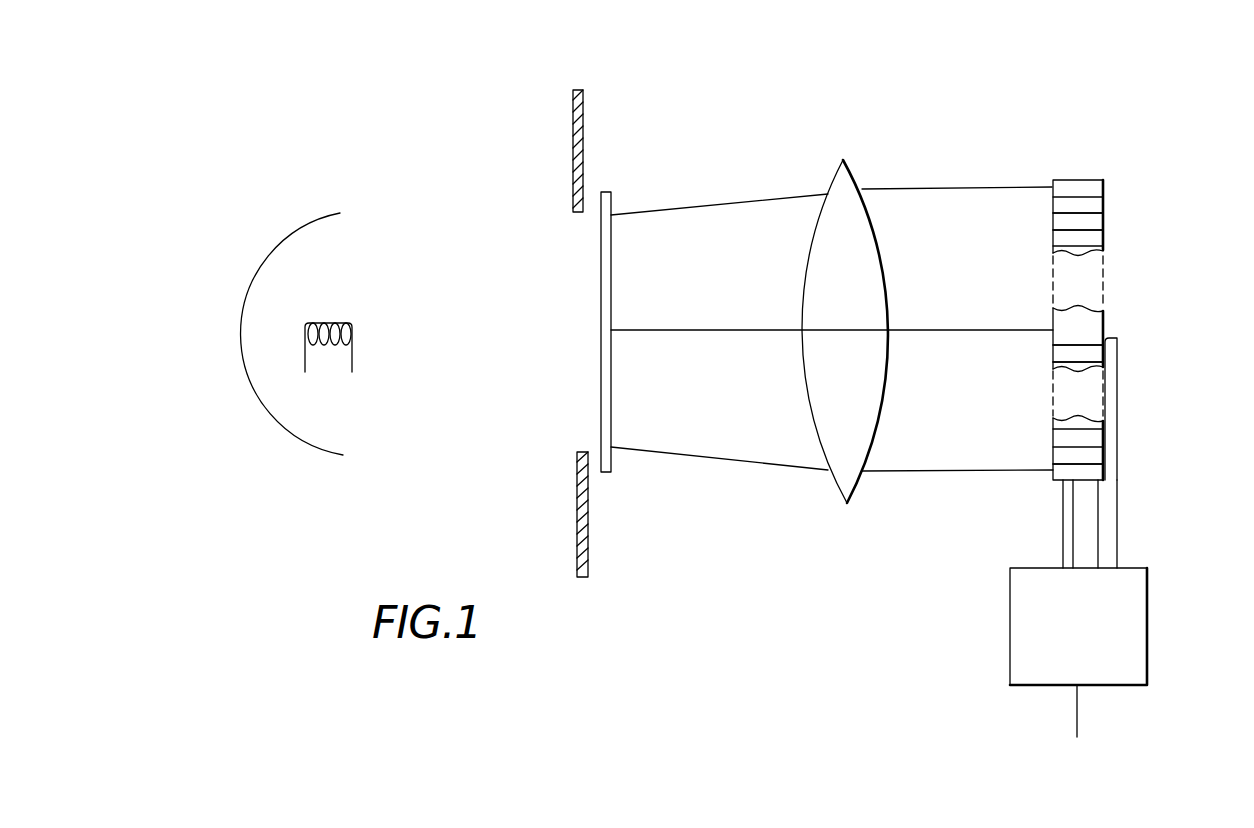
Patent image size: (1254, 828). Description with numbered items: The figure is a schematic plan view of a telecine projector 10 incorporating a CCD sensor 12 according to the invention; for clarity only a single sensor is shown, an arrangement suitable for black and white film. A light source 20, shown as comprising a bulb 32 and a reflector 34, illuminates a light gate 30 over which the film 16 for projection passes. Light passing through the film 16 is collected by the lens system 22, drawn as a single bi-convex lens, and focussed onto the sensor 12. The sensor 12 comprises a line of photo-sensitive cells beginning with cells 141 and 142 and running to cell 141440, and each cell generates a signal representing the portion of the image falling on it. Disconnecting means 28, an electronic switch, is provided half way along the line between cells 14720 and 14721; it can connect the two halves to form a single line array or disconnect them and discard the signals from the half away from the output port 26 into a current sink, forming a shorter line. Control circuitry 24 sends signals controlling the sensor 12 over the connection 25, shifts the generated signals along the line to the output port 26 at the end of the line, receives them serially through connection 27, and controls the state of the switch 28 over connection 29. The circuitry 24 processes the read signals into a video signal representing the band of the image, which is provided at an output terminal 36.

The telecine projector 10 is at (318, 99).
The light source 20 is at (240, 249).
The reflector 34 is at (242, 385).
The bulb 32 is at (355, 330).
The light gate 30 is at (573, 104).
The film 16 is at (609, 192).
The lens system 22 is at (848, 164).
The CCD sensor 12 is at (1075, 170).
The photo-sensitive cell 141 is at (1090, 190).
The photo-sensitive cell 142 is at (1087, 204).
The photo-sensitive cell 14720 is at (1090, 320).
The disconnecting means 28 is at (1089, 339).
The photo-sensitive cell 14721 is at (1090, 353).
The connection 29 is at (1120, 394).
The photo-sensitive cell 141440 is at (1090, 457).
The output port 26 is at (1092, 476).
The connection 25 is at (1068, 503).
The connection 27 is at (1099, 545).
The control circuitry 24 is at (1030, 588).
The output terminal 36 is at (1077, 708).